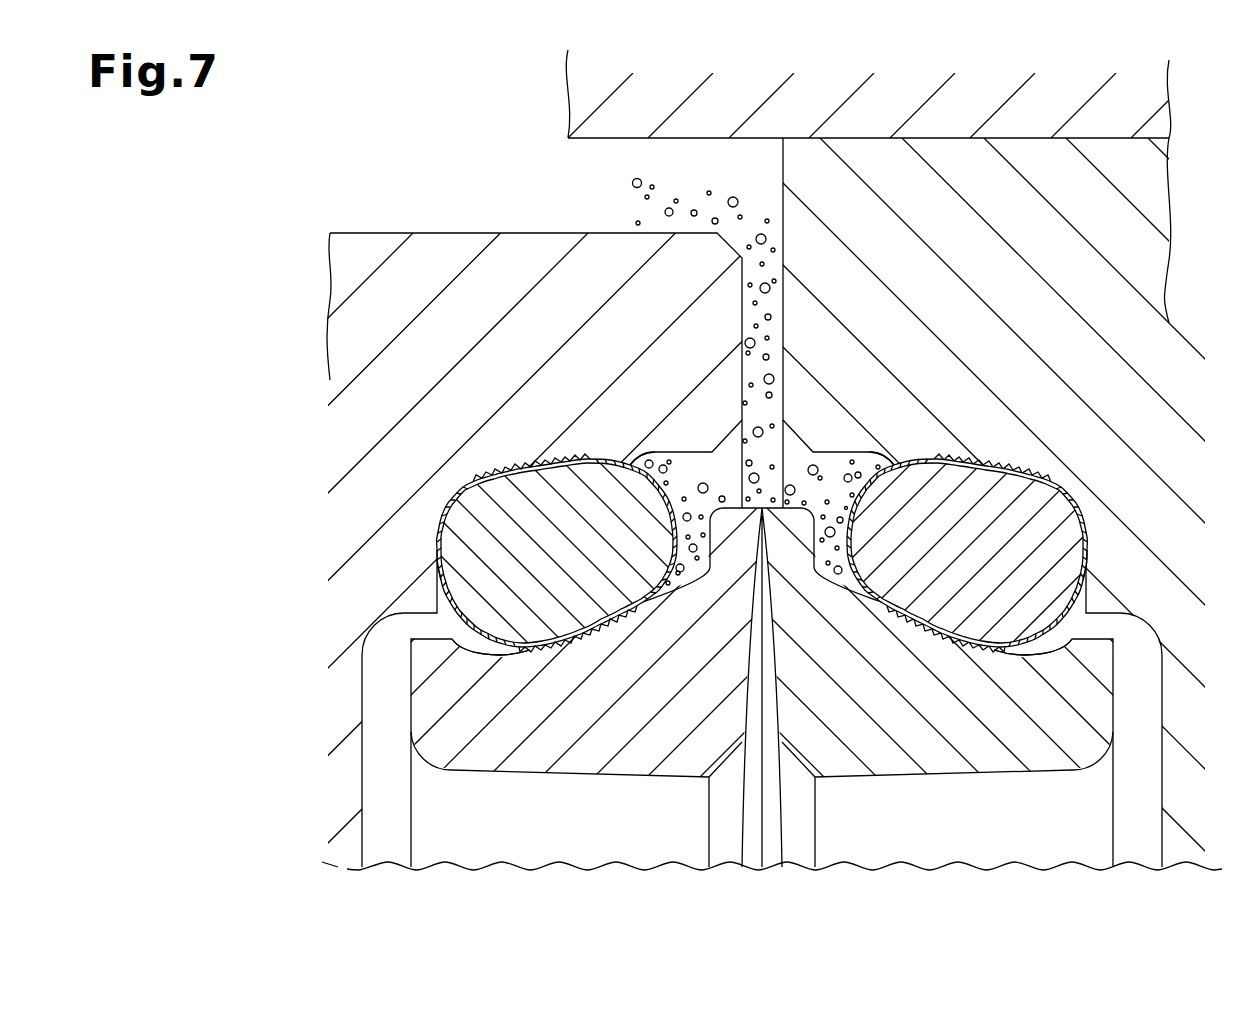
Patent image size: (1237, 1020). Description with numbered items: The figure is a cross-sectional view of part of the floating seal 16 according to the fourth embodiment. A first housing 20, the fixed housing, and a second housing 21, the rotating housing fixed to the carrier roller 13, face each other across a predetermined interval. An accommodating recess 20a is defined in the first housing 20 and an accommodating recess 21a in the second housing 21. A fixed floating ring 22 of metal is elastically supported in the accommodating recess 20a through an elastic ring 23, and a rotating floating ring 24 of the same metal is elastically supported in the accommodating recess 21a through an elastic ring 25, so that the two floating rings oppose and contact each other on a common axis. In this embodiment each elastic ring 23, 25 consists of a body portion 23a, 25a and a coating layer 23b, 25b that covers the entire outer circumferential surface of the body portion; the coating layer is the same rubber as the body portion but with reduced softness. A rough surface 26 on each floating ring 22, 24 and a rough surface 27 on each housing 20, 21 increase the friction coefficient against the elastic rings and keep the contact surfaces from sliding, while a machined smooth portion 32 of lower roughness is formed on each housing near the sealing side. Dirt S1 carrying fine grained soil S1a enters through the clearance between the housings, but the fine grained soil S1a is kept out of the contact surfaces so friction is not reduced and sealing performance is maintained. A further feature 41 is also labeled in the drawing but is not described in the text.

The carrier roller 13 is at (1172, 98).
The floating seal 16 is at (381, 232).
The first housing 20 is at (462, 240).
The accommodating recess 20a is at (364, 782).
The second housing 21 is at (783, 160).
The accommodating recess 21a is at (1163, 782).
The fixed floating ring 22 is at (534, 768).
The elastic ring 23 is at (670, 557).
The body portion 23a is at (445, 553).
The coating layer 23b is at (446, 597).
The rotating floating ring 24 is at (990, 768).
The elastic ring 25 is at (965, 542).
The body portion 25a is at (1081, 553).
The coating layer 25b is at (1080, 597).
The rough surface 26 is at (553, 644).
The rough surface 27 is at (568, 464).
The machined smooth portion 32 is at (630, 459).
The groove bottom surface 41 is at (465, 628).
The dirt S1 is at (644, 197).
The fine grained soil S1a is at (776, 280).